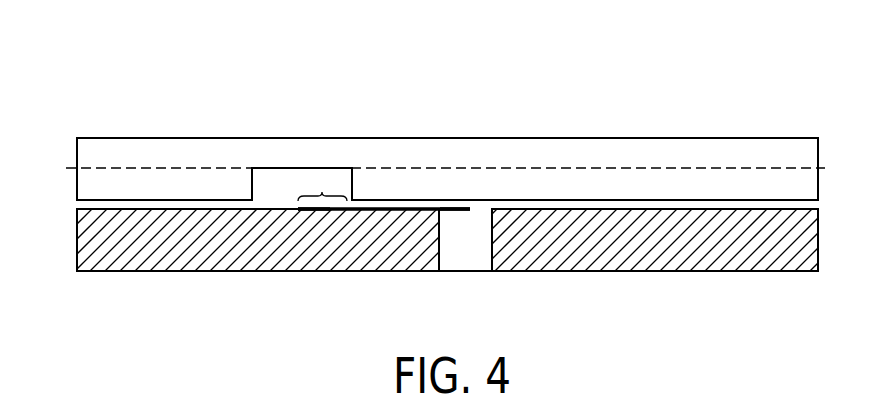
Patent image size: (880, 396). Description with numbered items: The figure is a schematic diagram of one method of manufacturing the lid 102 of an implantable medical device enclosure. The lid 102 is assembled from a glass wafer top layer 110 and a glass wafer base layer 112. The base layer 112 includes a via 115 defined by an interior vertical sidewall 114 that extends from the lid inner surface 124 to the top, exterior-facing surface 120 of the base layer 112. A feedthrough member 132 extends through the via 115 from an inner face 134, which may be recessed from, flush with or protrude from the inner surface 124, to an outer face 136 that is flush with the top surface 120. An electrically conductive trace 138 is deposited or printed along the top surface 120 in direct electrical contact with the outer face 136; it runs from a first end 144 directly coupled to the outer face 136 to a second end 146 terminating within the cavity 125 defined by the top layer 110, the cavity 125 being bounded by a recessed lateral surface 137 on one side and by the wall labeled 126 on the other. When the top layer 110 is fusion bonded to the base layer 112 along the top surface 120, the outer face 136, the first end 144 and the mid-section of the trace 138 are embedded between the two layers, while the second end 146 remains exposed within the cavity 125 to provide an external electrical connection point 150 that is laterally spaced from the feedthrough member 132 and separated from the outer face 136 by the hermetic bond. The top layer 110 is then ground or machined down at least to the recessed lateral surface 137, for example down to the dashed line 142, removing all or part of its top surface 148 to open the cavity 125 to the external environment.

The lid 102 is at (616, 64).
The top layer 110 is at (482, 147).
The base layer 112 is at (590, 260).
The interior vertical sidewall 114 is at (437, 228).
The via 115 is at (474, 304).
The top surface 120 is at (265, 207).
The inner surface 124 is at (145, 271).
The cavity 125 is at (322, 135).
The recess wall 126 is at (262, 168).
The feedthrough member 132 is at (455, 263).
The inner face 134 is at (492, 268).
The outer face 136 is at (485, 210).
The recessed lateral surface 137 is at (332, 205).
The electrically conductive trace 138 is at (362, 210).
The dashed line 142 is at (70, 168).
The first end 144 is at (470, 208).
The second end 146 is at (298, 210).
The top surface 148 is at (125, 137).
The external electrical connection point 150 is at (322, 185).